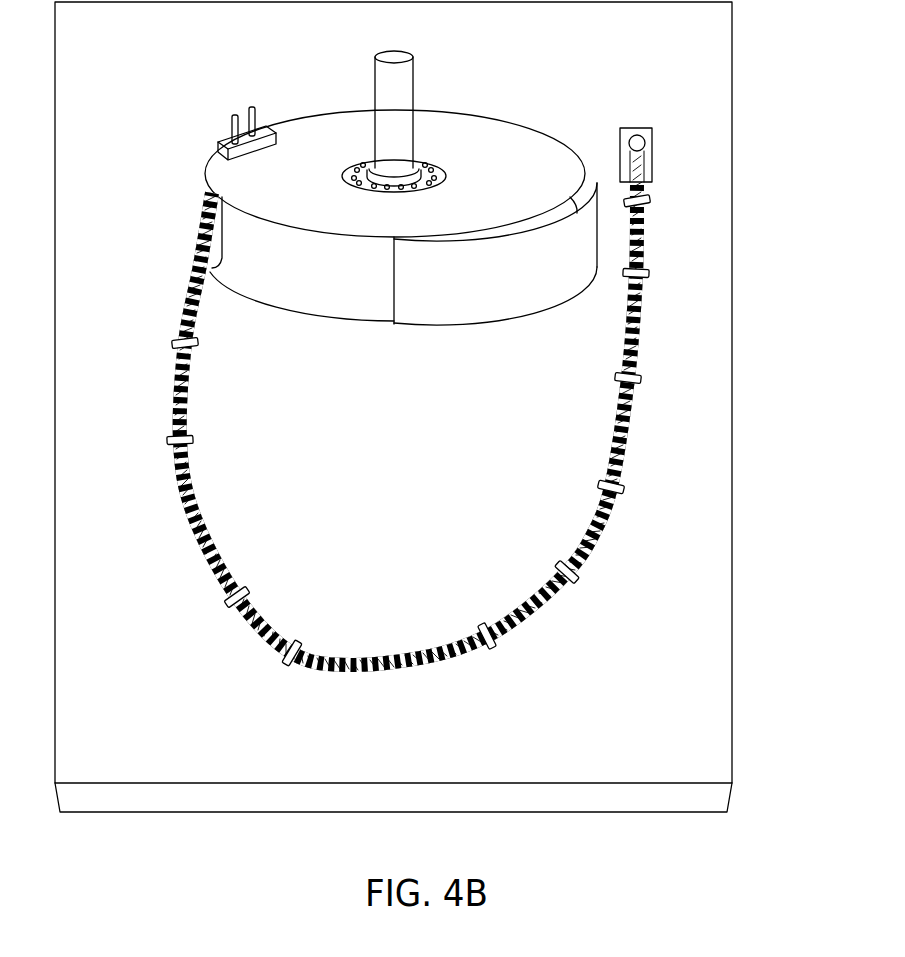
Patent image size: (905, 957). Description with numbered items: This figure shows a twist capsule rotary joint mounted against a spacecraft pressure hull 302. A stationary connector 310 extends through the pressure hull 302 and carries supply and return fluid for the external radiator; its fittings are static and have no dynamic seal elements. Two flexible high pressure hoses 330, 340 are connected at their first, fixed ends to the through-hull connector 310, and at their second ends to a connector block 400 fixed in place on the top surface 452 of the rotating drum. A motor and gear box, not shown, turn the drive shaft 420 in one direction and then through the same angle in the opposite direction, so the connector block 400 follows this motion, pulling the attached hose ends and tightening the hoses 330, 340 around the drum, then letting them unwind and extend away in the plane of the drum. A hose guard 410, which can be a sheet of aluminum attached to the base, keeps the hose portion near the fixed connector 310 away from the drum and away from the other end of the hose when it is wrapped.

The pressure hull 302 is at (733, 622).
The connector 310 is at (640, 128).
The flexible hose 330 is at (515, 632).
The flexible hose 340 is at (530, 598).
The connector block 400 is at (262, 122).
The hose guard 410 is at (513, 297).
The drive shaft 420 is at (405, 70).
The top surface 452 is at (527, 150).